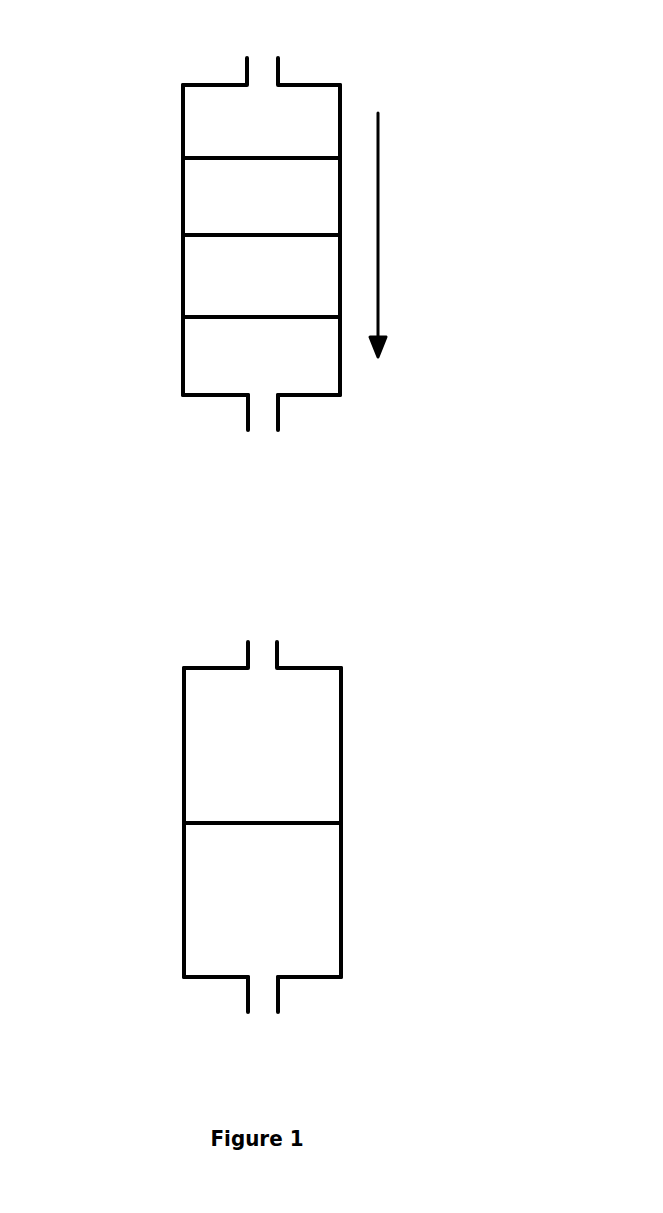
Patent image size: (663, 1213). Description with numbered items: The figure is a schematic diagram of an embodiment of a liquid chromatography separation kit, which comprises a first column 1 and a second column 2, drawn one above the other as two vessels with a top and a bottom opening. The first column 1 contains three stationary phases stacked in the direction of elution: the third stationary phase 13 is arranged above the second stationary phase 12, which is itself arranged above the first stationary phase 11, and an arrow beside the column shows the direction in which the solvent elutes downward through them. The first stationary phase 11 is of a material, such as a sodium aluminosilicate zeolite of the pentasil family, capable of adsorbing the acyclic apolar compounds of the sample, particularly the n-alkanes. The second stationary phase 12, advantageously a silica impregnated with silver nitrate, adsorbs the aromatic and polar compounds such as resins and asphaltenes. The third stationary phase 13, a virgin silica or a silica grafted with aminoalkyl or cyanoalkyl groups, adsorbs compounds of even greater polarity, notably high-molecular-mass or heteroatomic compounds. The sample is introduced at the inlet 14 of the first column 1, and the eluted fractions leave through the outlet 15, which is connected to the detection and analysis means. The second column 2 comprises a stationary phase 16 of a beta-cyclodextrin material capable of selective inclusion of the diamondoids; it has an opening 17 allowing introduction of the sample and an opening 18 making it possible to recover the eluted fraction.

The first column 1 is at (306, 266).
The second column 2 is at (267, 848).
The first stationary phase 11 is at (212, 362).
The second stationary phase 12 is at (218, 278).
The third stationary phase 13 is at (215, 199).
The inlet 14 is at (263, 55).
The outlet 15 is at (260, 430).
The stationary phase 16 is at (218, 862).
The opening 17 is at (265, 630).
The opening 18 is at (257, 1012).